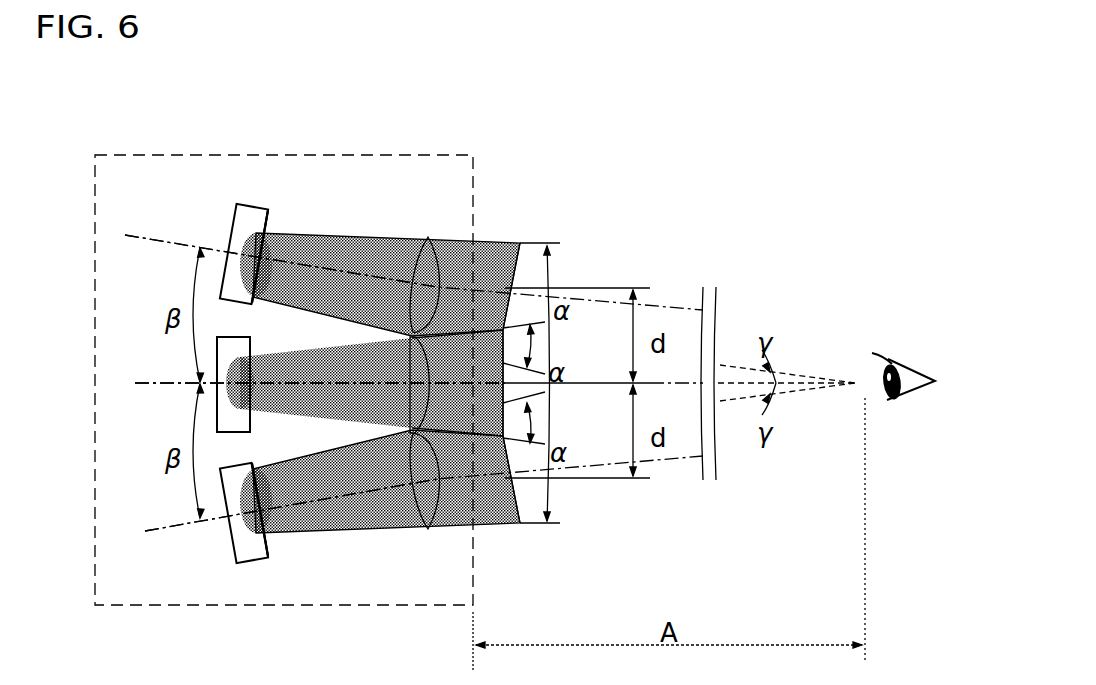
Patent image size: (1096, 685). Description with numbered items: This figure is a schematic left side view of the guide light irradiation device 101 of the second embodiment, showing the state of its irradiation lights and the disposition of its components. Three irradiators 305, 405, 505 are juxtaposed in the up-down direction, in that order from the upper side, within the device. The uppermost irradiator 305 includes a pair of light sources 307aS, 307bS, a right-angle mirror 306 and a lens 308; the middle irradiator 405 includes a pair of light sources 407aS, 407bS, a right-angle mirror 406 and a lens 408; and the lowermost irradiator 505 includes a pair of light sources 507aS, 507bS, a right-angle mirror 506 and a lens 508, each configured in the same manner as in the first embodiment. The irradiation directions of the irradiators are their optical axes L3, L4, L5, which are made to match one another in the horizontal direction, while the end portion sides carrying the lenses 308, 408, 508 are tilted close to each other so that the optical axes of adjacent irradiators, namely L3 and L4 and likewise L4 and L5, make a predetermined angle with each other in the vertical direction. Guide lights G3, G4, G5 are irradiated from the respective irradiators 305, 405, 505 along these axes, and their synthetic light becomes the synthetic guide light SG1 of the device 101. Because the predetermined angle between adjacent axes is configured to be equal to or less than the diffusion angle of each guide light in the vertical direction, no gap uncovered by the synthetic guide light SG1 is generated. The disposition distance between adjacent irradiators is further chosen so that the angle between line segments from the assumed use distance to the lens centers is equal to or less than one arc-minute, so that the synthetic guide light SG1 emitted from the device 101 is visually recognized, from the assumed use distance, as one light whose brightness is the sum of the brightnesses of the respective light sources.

The guide light irradiation device 101 is at (138, 152).
The irradiator 305 is at (128, 233).
The right-angle mirror 306 is at (245, 206).
The light source 307bS is at (262, 258).
The light source 307aS is at (341, 209).
The lens 308 is at (427, 238).
The irradiator 405 is at (130, 381).
The right-angle mirror 406 is at (232, 432).
The light source 407bS is at (248, 385).
The light source 407aS is at (291, 379).
The lens 408 is at (410, 420).
The irradiator 505 is at (135, 519).
The right-angle mirror 506 is at (253, 565).
The light source 507bS is at (260, 513).
The light source 507aS is at (343, 558).
The lens 508 is at (428, 528).
The optical axis L3 is at (162, 238).
The optical axis L4 is at (145, 383).
The optical axis L5 is at (160, 529).
The guide light G3 is at (345, 233).
The guide light G4 is at (405, 338).
The guide light G5 is at (350, 533).
The synthetic guide light SG1 is at (500, 222).